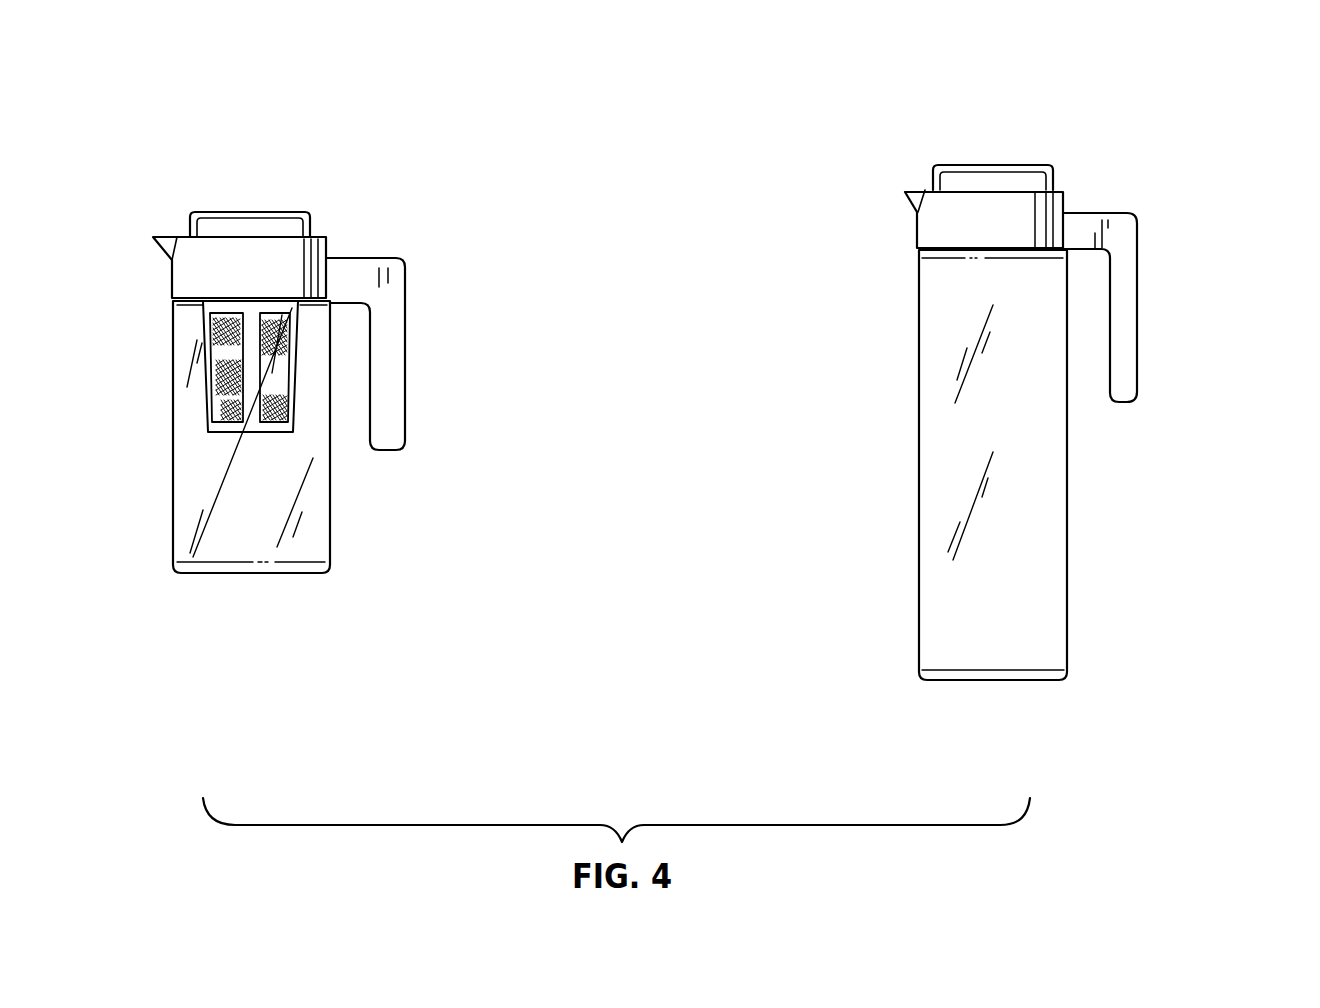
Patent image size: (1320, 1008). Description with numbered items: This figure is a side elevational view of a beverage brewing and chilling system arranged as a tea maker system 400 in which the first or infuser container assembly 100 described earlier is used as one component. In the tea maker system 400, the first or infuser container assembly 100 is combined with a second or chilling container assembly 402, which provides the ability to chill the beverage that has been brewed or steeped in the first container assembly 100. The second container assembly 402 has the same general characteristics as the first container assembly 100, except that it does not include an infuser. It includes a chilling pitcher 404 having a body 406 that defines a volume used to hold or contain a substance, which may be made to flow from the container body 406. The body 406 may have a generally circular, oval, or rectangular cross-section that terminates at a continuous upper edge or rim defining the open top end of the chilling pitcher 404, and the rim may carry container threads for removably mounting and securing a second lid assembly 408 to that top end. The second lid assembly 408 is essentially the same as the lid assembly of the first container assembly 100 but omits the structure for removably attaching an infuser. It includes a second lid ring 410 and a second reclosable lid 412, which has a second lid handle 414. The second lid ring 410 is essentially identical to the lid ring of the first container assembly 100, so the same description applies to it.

The cold brew coffee maker with filter basket 100 is at (352, 242).
The pitcher 400 is at (342, 617).
The lid assembly 402 is at (1100, 158).
The container body 404 is at (898, 415).
The side wall 406 is at (1068, 570).
The handle assembly 408 is at (1213, 417).
The lid 410 is at (917, 227).
The handle 412 is at (1067, 192).
The lid knob 414 is at (1033, 163).